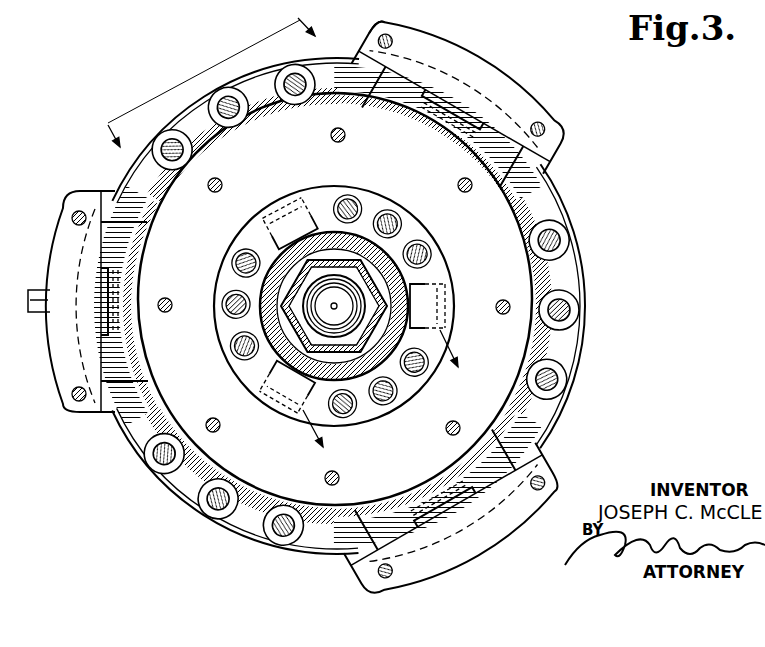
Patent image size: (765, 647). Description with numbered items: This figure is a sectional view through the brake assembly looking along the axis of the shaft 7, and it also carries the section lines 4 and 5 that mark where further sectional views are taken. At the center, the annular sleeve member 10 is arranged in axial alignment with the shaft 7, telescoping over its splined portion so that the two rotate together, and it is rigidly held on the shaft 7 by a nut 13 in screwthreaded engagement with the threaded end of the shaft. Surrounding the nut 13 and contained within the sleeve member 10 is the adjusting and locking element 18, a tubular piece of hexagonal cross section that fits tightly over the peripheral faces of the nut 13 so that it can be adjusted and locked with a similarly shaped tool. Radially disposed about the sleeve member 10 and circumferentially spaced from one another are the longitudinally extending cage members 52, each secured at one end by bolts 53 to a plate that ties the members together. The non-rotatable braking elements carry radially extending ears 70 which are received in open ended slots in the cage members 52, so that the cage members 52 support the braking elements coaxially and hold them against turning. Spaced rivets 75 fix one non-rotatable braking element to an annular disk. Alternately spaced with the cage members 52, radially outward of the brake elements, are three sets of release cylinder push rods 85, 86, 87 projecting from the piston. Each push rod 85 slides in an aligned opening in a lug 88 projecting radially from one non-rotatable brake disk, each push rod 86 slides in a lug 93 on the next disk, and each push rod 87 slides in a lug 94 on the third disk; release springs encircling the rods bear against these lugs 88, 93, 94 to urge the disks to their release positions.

The section line 4- 4 is at (204, 73).
The section line 5- 5 is at (388, 401).
The shaft 7 is at (357, 302).
The annular sleeve member 10 is at (280, 340).
The nut 13 is at (353, 277).
The adjusting and locking element 18 is at (333, 258).
The cage member 52 is at (72, 408).
The bolt 53 is at (348, 0).
The ear 70 is at (107, 353).
The rivet 75 is at (468, 191).
The push rod 85 is at (173, 147).
The push rod 86 is at (223, 100).
The push rod 87 is at (292, 82).
The lug 88 is at (155, 142).
The lug 93 is at (213, 97).
The lug 94 is at (275, 82).